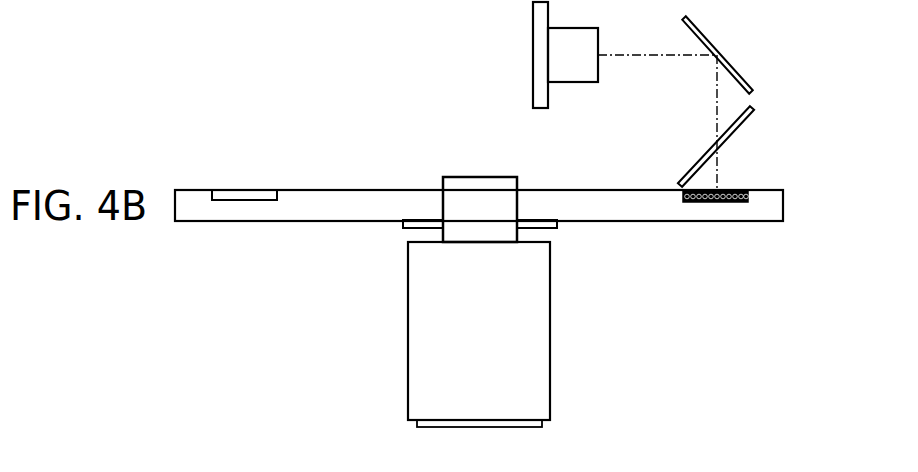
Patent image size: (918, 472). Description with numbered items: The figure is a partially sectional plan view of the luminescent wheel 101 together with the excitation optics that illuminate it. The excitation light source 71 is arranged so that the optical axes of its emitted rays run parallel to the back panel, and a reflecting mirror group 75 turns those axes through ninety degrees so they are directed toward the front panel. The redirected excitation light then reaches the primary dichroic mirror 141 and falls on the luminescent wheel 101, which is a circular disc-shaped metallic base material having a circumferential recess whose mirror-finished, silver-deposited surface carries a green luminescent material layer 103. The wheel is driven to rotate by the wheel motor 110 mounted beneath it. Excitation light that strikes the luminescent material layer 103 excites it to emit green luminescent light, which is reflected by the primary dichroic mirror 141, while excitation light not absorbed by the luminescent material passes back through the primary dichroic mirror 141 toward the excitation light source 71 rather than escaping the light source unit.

The excitation light source 71 is at (572, 67).
The reflecting mirror group 75 is at (741, 58).
The primary dichroic mirror 141 is at (737, 128).
The green luminescent material layer 103 is at (728, 190).
The luminescent wheel 101 is at (772, 232).
The wheel motor 110 is at (427, 328).